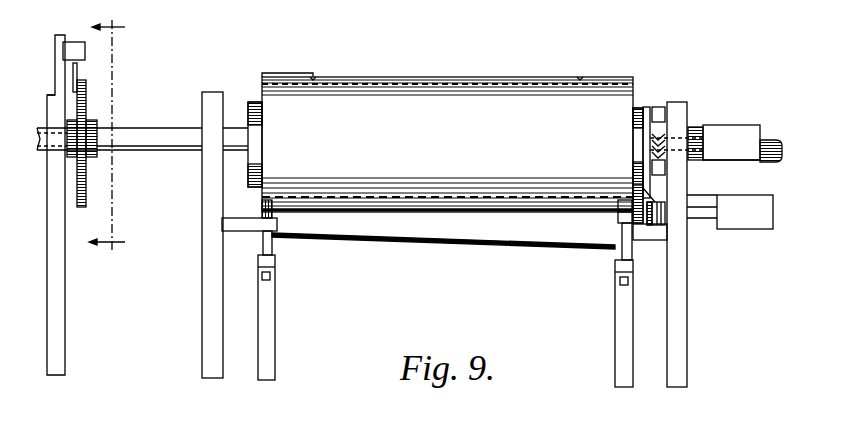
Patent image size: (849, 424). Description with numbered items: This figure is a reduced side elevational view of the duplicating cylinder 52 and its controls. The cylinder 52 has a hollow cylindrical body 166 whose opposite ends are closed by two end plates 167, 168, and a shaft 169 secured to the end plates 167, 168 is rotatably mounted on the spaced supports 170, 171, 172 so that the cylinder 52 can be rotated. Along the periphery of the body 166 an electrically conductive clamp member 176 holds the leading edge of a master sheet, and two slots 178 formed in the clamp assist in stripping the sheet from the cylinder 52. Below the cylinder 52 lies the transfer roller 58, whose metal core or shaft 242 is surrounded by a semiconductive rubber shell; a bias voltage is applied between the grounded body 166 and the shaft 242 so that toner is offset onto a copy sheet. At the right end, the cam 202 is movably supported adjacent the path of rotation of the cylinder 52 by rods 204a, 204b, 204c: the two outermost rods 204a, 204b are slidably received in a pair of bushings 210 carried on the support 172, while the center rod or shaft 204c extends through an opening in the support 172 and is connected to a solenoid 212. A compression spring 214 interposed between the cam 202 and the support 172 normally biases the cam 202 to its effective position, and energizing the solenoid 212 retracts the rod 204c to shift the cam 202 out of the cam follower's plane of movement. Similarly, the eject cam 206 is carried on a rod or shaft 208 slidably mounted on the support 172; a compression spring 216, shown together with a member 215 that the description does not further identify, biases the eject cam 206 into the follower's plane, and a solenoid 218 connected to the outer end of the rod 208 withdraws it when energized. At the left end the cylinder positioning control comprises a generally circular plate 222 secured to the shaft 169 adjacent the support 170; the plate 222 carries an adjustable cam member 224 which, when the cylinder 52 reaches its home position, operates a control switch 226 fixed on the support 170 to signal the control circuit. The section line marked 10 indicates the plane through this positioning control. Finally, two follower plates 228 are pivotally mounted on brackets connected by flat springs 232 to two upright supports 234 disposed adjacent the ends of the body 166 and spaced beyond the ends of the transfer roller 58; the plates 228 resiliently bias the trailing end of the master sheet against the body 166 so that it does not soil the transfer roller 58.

The section line 10- 10 is at (107, 137).
The cylinder 52 is at (447, 124).
The transfer roller 58 is at (420, 247).
The hollow cylindrical body 166 is at (446, 144).
The end plate 167 is at (248, 102).
The end plate 168 is at (640, 107).
The shaft 169 is at (150, 150).
The support 170 is at (60, 358).
The support 171 is at (205, 343).
The support 172 is at (687, 339).
The clamp member 176 is at (435, 77).
The slots 178 is at (313, 76).
The cam 202 is at (648, 107).
The outermost rod 204a is at (659, 107).
The outermost rod 204b is at (655, 167).
The center rod or shaft 204c is at (690, 120).
The eject cam 206 is at (636, 178).
The rod or shaft 208 is at (618, 262).
The bushings 210 is at (702, 167).
The solenoid 212 is at (747, 126).
The compression spring 214 is at (657, 133).
The clutch member 215 is at (667, 205).
The compression spring 216 is at (662, 228).
The solenoid 218 is at (773, 207).
The circular plate 222 is at (87, 105).
The cam member 224 is at (79, 72).
The control switch 226 is at (72, 42).
The follower plates 228 is at (265, 205).
The flat springs 232 is at (272, 250).
The upright supports 234 is at (266, 335).
The metal core or shaft 242 is at (228, 232).